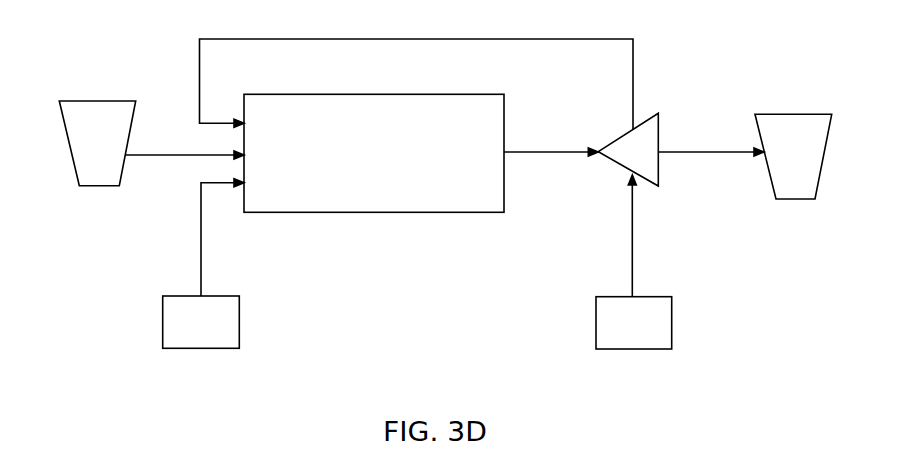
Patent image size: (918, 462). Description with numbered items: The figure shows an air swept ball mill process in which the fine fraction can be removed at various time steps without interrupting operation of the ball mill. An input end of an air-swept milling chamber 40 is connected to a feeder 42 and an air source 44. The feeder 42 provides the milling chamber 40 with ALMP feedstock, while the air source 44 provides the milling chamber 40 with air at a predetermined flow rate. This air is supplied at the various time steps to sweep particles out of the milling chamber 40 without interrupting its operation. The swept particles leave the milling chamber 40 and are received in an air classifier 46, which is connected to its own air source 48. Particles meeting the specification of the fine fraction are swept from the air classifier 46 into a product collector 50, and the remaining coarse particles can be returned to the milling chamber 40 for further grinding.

The air-swept milling chamber 40 is at (378, 105).
The feeder 42 is at (99, 109).
The air source 44 is at (203, 338).
The air classifier 46 is at (626, 147).
The air source 48 is at (632, 338).
The product collector 50 is at (791, 124).